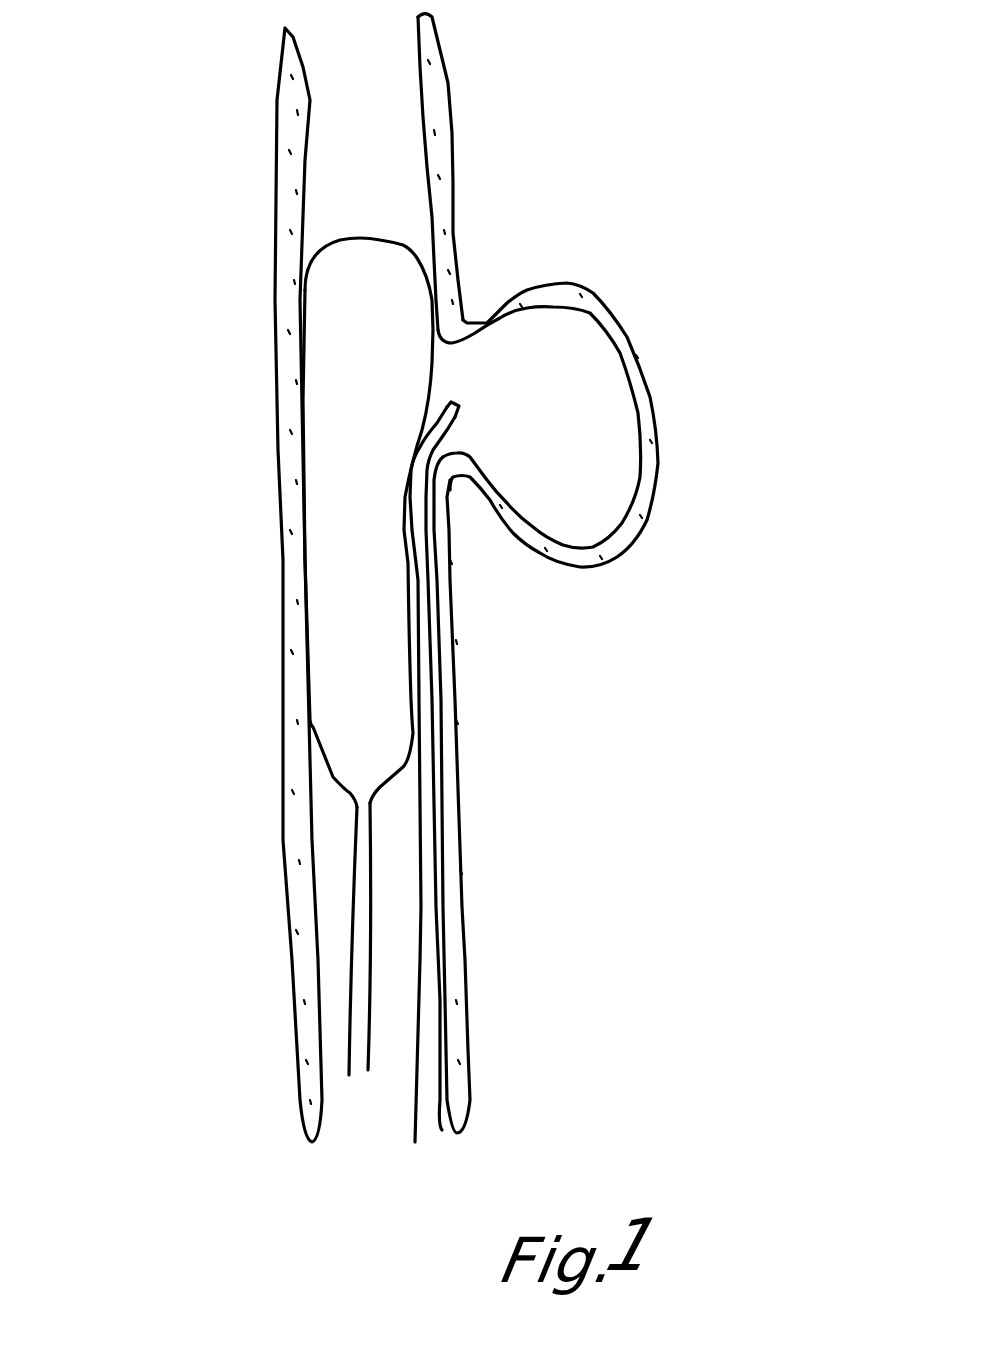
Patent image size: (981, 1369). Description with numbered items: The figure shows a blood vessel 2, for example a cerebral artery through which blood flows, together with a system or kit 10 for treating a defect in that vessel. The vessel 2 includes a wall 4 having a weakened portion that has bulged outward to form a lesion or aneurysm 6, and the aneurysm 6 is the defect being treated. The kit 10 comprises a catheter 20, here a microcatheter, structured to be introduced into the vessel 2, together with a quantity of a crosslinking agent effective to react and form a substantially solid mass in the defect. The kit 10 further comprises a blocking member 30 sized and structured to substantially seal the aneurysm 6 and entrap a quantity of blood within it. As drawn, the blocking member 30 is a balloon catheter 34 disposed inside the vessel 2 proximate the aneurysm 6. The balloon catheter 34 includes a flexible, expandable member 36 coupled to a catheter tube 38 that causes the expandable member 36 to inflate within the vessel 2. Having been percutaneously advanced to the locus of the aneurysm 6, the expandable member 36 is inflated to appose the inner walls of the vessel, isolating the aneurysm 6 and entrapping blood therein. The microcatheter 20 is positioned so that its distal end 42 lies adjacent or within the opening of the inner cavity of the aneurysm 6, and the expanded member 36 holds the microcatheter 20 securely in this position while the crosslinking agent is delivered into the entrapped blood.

The blood vessel 2 is at (472, 203).
The wall 4 is at (451, 147).
The aneurysm 6 is at (630, 327).
The kit 10 is at (212, 363).
The microcatheter 20 is at (443, 622).
The blocking member 30 is at (297, 664).
The balloon catheter 34 is at (303, 580).
The expandable member 36 is at (390, 705).
The catheter tube 38 is at (375, 912).
The distal end 42 is at (454, 402).